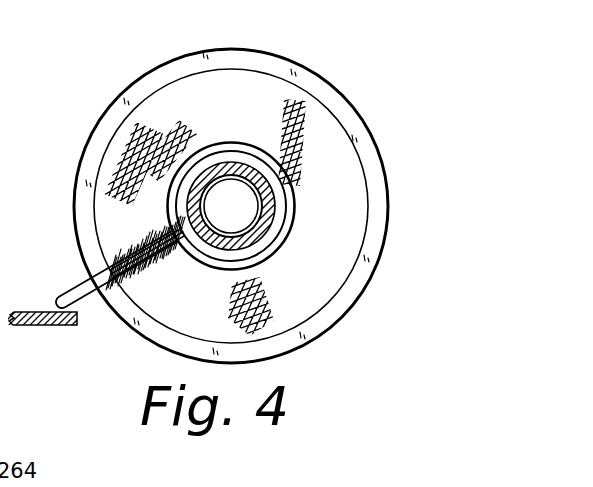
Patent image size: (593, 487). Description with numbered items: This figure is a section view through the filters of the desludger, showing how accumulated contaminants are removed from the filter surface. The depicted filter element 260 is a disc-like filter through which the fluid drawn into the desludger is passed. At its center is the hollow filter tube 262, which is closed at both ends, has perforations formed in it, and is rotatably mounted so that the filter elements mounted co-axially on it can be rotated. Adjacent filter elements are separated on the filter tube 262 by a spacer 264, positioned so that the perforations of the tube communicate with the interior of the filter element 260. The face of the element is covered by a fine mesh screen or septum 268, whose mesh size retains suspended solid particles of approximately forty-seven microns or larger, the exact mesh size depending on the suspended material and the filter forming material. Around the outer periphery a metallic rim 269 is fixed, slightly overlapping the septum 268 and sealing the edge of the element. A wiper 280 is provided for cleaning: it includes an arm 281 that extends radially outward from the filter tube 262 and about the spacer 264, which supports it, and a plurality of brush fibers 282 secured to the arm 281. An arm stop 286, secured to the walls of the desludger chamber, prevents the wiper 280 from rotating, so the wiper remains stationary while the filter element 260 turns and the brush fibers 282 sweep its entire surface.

The filter element 260 is at (142, 60).
The filter tube 262 is at (270, 207).
The spacer 264 is at (232, 262).
The fine mesh screen or septum 268 is at (222, 82).
The metallic rim 269 is at (282, 62).
The wiper 280 is at (95, 318).
The wiper arm 281 is at (80, 285).
The brush fibers 282 is at (149, 282).
The arm stop 286 is at (55, 326).